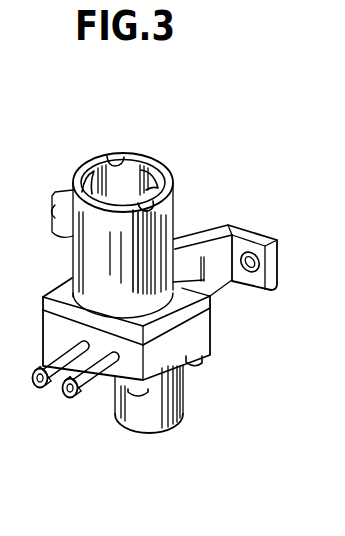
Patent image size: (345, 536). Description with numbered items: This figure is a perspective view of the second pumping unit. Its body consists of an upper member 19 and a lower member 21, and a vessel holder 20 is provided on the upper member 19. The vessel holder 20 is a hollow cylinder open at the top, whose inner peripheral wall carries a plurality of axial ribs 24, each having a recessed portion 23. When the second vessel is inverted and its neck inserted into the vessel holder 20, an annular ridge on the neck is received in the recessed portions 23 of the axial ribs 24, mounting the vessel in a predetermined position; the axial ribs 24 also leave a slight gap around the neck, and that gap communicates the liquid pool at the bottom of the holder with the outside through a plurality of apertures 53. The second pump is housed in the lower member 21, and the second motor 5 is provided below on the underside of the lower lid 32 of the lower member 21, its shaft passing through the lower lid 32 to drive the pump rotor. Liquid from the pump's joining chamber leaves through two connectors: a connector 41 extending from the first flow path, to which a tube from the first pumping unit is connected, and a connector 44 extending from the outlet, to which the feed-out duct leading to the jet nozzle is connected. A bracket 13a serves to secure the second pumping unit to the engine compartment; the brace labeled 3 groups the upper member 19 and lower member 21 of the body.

The valve body 3 is at (163, 329).
The second motor 5 is at (170, 413).
The bracket 13a is at (239, 236).
The upper member 19 is at (202, 300).
The vessel holder 20 is at (83, 253).
The lower member 21 is at (204, 331).
The recessed portion 23 is at (126, 160).
The axial ribs 24 is at (76, 171).
The lower lid 32 is at (196, 366).
The connector 41 is at (36, 388).
The connector 44 is at (75, 400).
The apertures 53 is at (152, 208).